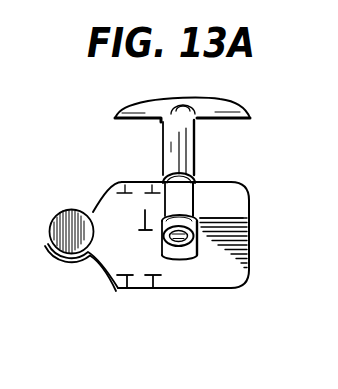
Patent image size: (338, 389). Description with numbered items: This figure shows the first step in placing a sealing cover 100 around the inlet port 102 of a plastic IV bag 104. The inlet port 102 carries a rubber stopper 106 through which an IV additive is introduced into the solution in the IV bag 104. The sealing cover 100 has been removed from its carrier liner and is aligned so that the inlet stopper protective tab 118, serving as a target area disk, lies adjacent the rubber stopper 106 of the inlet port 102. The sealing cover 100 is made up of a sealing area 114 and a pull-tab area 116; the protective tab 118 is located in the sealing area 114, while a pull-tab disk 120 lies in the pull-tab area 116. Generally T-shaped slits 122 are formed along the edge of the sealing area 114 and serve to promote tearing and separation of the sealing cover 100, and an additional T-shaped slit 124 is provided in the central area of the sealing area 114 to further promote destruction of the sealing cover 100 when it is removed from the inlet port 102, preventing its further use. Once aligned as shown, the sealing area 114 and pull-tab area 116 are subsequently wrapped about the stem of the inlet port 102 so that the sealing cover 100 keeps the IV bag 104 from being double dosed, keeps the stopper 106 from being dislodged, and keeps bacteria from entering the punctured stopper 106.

The sealing cover 100 is at (155, 302).
The inlet port 102 is at (162, 147).
The plastic IV bag 104 is at (146, 108).
The rubber stopper 106 is at (243, 218).
The sealing area 114 is at (237, 324).
The pull-tab area 116 is at (78, 283).
The inlet stopper protective tab 118 is at (196, 245).
The pull-tab disk 120 is at (70, 209).
The T-shaped slits 122 is at (150, 275).
The additional T-shaped slit 124 is at (150, 215).